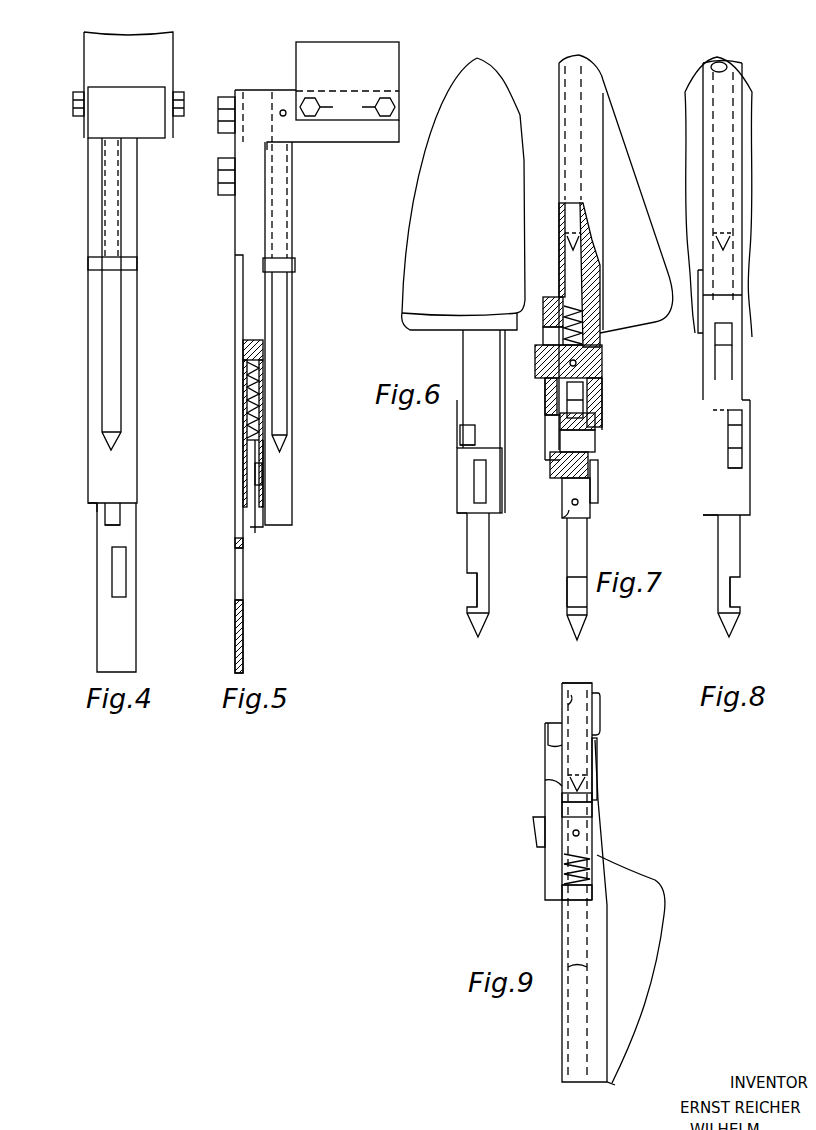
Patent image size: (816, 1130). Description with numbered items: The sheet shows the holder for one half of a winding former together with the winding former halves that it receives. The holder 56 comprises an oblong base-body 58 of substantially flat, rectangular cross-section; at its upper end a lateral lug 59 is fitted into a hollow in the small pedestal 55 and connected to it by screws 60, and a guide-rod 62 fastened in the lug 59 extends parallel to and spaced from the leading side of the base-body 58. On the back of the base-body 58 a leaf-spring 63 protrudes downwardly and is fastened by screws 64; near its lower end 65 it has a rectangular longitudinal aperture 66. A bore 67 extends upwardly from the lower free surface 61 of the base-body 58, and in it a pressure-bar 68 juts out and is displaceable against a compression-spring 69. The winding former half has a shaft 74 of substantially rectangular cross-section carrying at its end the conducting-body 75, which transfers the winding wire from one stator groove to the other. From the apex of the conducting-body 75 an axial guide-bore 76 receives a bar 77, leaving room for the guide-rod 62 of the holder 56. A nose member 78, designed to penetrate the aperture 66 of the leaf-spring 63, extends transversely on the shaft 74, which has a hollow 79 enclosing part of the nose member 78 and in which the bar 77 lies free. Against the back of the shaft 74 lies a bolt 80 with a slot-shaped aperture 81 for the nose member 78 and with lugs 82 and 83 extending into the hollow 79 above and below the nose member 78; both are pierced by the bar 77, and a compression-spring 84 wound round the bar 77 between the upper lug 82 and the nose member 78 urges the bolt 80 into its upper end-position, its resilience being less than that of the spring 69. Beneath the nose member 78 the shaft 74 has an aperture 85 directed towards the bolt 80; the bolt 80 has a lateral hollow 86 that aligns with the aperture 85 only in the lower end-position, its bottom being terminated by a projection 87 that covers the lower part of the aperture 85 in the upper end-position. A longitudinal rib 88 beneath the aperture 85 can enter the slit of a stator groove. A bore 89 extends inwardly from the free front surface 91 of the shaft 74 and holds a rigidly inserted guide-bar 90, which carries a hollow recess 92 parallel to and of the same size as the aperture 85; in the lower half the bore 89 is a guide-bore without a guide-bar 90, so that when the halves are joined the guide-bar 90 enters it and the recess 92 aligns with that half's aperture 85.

In FIG. 4, the small pedestal 55 is at (166, 63).
In FIG. 5, the small pedestal 55 is at (296, 62).
In FIG. 4, the holder 56 is at (86, 270).
In FIG. 5, the holder 56 is at (232, 270).
In FIG. 4, the base-body 58 is at (130, 294).
In FIG. 5, the base-body 58 is at (270, 221).
In FIG. 4, the lateral lug 59 is at (150, 134).
In FIG. 5, the lateral lug 59 is at (348, 138).
In FIG. 4, the screws 60 is at (78, 118).
In FIG. 5, the screws 60 is at (347, 108).
In FIG. 4, the lower free surface 61 is at (90, 506).
In FIG. 5, the lower free surface 61 is at (264, 518).
In FIG. 4, the guide-rod 62 is at (112, 405).
In FIG. 5, the guide-rod 62 is at (280, 322).
In FIG. 4, the leaf-spring 63 is at (126, 520).
In FIG. 5, the leaf-spring 63 is at (235, 336).
In FIG. 5, the screws 64 is at (226, 165).
In FIG. 4, the lower end of leaf-spring 65 is at (133, 652).
In FIG. 5, the lower end of leaf-spring 65 is at (240, 650).
In FIG. 4, the longitudinal aperture 66 is at (120, 578).
In FIG. 5, the longitudinal aperture 66 is at (240, 585).
In FIG. 5, the bore 67 is at (250, 402).
In FIG. 4, the pressure-bar 68 is at (110, 520).
In FIG. 5, the pressure-bar 68 is at (251, 531).
In FIG. 5, the compression-spring 69 is at (252, 433).
In FIG. 6, the shaft 74 is at (470, 366).
In FIG. 7, the shaft 74 is at (600, 362).
In FIG. 8, the shaft 74 is at (712, 483).
In FIG. 6, the conducting-body 75 is at (403, 276).
In FIG. 7, the conducting-body 75 is at (620, 148).
In FIG. 8, the conducting-body 75 is at (745, 334).
In FIG. 9, the conducting-body 75 is at (630, 1023).
In FIG. 7, the guide-bore 76 is at (573, 115).
In FIG. 8, the guide-bore 76 is at (727, 68).
In FIG. 9, the guide-bore 76 is at (576, 1018).
In FIG. 7, the bar 77 is at (570, 268).
In FIG. 8, the bar 77 is at (722, 283).
In FIG. 9, the bar 77 is at (575, 932).
In FIG. 7, the nose member 78 is at (548, 368).
In FIG. 8, the nose member 78 is at (712, 363).
In FIG. 9, the nose member 78 is at (535, 830).
In FIG. 7, the hollow 79 is at (590, 341).
In FIG. 9, the hollow 79 is at (592, 798).
In FIG. 7, the bolt 80 is at (547, 401).
In FIG. 8, the bolt 80 is at (706, 419).
In FIG. 9, the bolt 80 is at (552, 788).
In FIG. 7, the aperture 81 is at (553, 337).
In FIG. 8, the aperture 81 is at (722, 331).
In FIG. 7, the upper lug 82 is at (590, 308).
In FIG. 9, the upper lug 82 is at (577, 893).
In FIG. 7, the lower lug 83 is at (590, 390).
In FIG. 9, the lower lug 83 is at (592, 812).
In FIG. 7, the compression-spring 84 is at (590, 323).
In FIG. 9, the compression-spring 84 is at (590, 868).
In FIG. 6, the aperture 85 is at (460, 432).
In FIG. 7, the aperture 85 is at (590, 452).
In FIG. 8, the aperture 85 is at (728, 450).
In FIG. 9, the aperture 85 is at (598, 757).
In FIG. 7, the lateral hollow 86 is at (548, 423).
In FIG. 8, the lateral hollow 86 is at (726, 437).
In FIG. 9, the lateral hollow 86 is at (552, 758).
In FIG. 6, the projection 87 is at (463, 450).
In FIG. 7, the projection 87 is at (556, 472).
In FIG. 8, the projection 87 is at (733, 470).
In FIG. 9, the projection 87 is at (555, 733).
In FIG. 6, the rib 88 is at (480, 490).
In FIG. 7, the rib 88 is at (596, 490).
In FIG. 9, the rib 88 is at (600, 712).
In FIG. 7, the bore 89 is at (565, 519).
In FIG. 9, the bore 89 is at (568, 705).
In FIG. 6, the guide-bar 90 is at (472, 556).
In FIG. 7, the guide-bar 90 is at (575, 560).
In FIG. 8, the guide-bar 90 is at (725, 556).
In FIG. 6, the free front surface 91 is at (460, 514).
In FIG. 7, the free front surface 91 is at (590, 515).
In FIG. 8, the free front surface 91 is at (712, 518).
In FIG. 9, the free front surface 91 is at (580, 682).
In FIG. 6, the hollow recess 92 is at (475, 591).
In FIG. 7, the hollow recess 92 is at (575, 593).
In FIG. 8, the hollow recess 92 is at (740, 600).